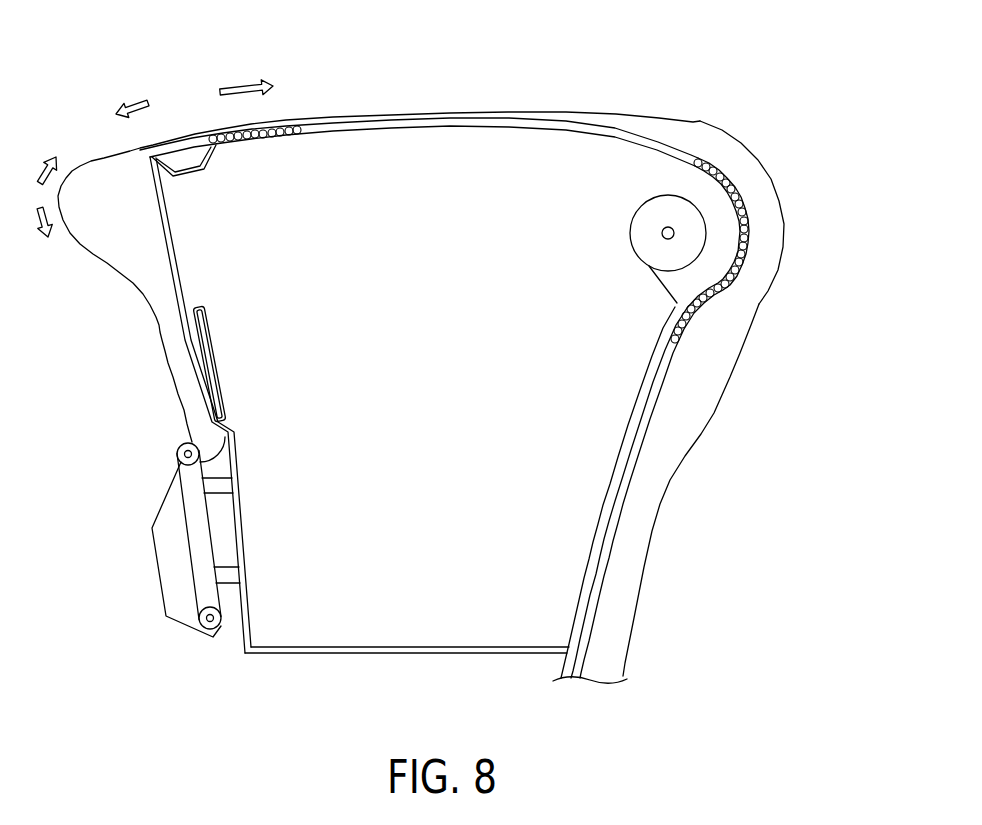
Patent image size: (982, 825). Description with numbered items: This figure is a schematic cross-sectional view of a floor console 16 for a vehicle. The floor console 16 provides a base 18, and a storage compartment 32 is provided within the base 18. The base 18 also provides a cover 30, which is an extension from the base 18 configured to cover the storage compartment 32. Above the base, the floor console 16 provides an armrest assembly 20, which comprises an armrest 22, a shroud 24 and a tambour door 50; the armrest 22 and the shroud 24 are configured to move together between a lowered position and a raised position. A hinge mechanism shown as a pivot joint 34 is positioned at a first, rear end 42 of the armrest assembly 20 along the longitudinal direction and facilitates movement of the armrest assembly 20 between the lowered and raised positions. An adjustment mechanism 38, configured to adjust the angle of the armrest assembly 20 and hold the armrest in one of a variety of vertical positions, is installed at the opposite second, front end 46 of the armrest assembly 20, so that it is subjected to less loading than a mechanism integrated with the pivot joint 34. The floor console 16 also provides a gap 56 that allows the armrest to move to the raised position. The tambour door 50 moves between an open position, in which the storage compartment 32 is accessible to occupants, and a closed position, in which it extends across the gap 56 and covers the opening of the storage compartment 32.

The floor console 16 is at (783, 458).
The base 18 is at (613, 541).
The armrest assembly 20 is at (749, 135).
The armrest 22 is at (360, 117).
The shroud 24 is at (187, 340).
The cover 30 is at (209, 361).
The storage compartment 32 is at (520, 185).
The pivot joint 34 is at (648, 217).
The adjustment mechanism 38 is at (200, 543).
The first end 42 is at (793, 180).
The second end 46 is at (80, 156).
The tambour door 50 is at (233, 131).
The gap 56 is at (729, 302).